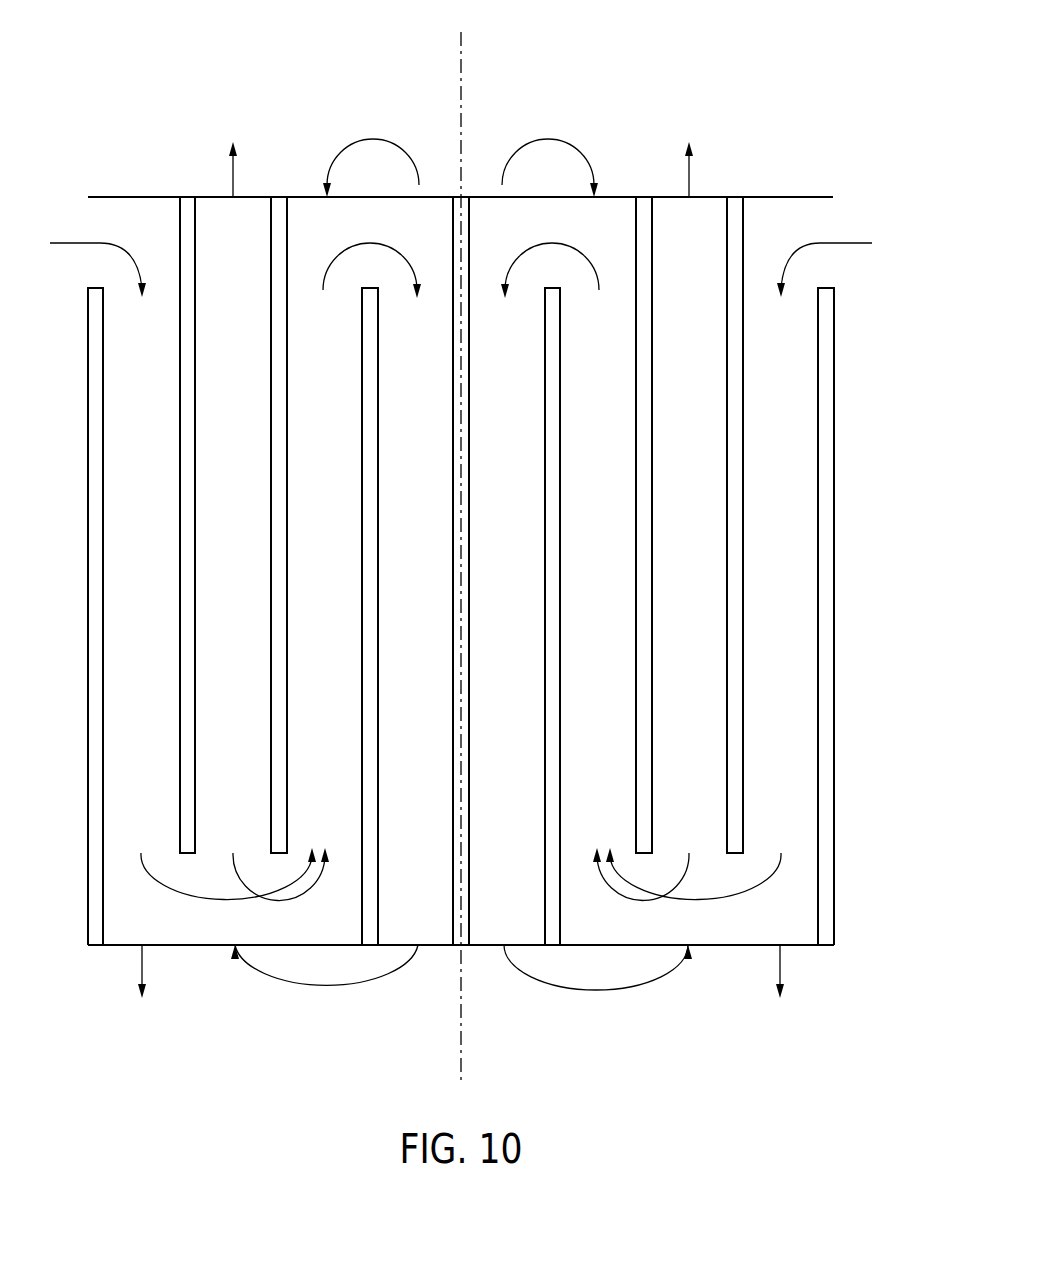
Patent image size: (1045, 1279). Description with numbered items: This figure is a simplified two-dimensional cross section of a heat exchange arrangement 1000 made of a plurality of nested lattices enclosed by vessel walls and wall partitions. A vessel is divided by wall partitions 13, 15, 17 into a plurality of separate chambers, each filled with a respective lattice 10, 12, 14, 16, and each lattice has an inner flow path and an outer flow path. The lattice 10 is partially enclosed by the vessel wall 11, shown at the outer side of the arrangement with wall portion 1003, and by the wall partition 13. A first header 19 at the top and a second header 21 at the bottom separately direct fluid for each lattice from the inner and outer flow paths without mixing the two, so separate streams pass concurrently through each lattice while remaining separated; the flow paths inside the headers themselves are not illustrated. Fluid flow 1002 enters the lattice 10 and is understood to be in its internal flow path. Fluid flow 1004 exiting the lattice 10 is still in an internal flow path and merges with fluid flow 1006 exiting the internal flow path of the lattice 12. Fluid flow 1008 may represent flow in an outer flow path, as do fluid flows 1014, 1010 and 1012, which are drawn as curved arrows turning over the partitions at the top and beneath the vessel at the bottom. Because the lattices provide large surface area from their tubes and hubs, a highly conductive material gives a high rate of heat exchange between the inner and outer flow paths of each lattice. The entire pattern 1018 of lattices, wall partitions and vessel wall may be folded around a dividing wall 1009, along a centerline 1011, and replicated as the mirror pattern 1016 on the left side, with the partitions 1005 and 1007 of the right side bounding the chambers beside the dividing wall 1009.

The heat exchanger assembly 1000 is at (140, 99).
The fluid flow 1002 is at (862, 243).
The outer wall 1003 is at (834, 664).
The fluid flow 1004 is at (700, 893).
The partition wall 1005 is at (743, 618).
The fluid flow 1006 is at (612, 893).
The partition wall 1007 is at (653, 618).
The fluid flow 1008 is at (780, 970).
The dividing wall 1009 is at (470, 618).
The fluid flow 1010 is at (689, 170).
The centerline 1011 is at (461, 1055).
The fluid flow 1012 is at (548, 138).
The fluid flow 1014 is at (596, 991).
The pattern 1016 is at (460, 1020).
The pattern 1018 is at (463, 83).
The lattice 10 is at (768, 748).
The vessel wall 11 is at (834, 812).
The lattice 12 is at (678, 748).
The wall partition 13 is at (743, 812).
The lattice 14 is at (586, 748).
The wall partition 15 is at (652, 812).
The lattice 16 is at (494, 748).
The wall partition 17 is at (560, 812).
The first header 19 is at (812, 197).
The second header 21 is at (818, 950).